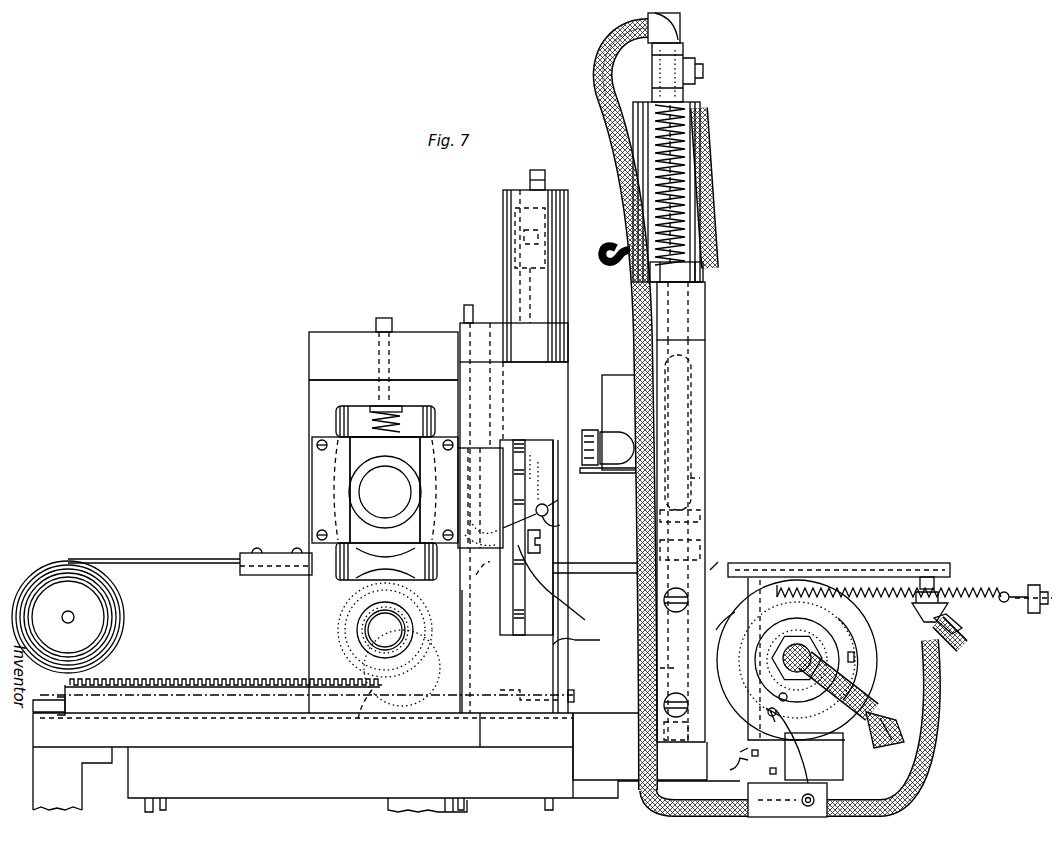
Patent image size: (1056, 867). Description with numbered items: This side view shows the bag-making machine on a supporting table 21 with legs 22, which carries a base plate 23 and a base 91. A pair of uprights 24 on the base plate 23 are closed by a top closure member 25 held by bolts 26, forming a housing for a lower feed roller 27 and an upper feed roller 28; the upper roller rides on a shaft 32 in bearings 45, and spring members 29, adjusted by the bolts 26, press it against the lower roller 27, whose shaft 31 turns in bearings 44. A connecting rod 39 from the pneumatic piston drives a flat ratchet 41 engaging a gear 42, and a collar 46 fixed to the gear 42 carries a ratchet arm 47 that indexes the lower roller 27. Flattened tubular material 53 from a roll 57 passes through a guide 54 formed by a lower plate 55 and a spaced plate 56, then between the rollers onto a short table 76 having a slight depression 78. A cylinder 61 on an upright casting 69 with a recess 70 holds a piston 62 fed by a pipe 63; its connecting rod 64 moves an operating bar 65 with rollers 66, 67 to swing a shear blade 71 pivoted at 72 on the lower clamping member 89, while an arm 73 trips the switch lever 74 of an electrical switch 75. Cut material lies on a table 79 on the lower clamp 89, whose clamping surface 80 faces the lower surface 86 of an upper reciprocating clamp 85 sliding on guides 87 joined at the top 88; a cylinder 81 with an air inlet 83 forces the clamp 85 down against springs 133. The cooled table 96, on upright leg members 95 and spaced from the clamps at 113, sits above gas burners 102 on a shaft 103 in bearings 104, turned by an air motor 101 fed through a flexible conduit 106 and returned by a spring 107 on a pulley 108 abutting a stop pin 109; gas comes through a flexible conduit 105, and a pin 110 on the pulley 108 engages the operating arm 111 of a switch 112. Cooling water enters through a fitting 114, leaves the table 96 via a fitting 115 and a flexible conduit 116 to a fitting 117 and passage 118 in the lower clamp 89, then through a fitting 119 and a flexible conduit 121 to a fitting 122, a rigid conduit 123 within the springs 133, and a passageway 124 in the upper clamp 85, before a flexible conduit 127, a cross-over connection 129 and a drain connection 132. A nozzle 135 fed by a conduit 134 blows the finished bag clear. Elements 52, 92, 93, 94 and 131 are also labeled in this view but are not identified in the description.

The supporting table 21 is at (612, 773).
The legs 22 is at (110, 795).
The base plate 23 is at (560, 728).
The uprights 24 is at (315, 430).
The top closure member 25 is at (345, 345).
The bolts 26 is at (392, 318).
The lower feed roller 27 is at (318, 598).
The upper feed roller 28 is at (318, 479).
The spring members 29 is at (400, 412).
The shaft 31 is at (370, 637).
The shaft 32 is at (385, 492).
The connecting rod 39 is at (50, 700).
The flat ratchet 41 is at (145, 678).
The gear 42 is at (315, 632).
The bearings 44 is at (410, 648).
The bearings 45 is at (380, 450).
The collar 46 is at (402, 705).
The ratchet arm 47 is at (354, 717).
The stop 52 is at (575, 688).
The material 53 is at (158, 556).
The guide member 54 is at (278, 552).
The lower plate 55 is at (262, 578).
The plate 56 is at (250, 550).
The roll 57 is at (126, 615).
The cylinder 61 is at (503, 203).
The piston 62 is at (516, 232).
The pipe 63 is at (545, 176).
The connecting rod 64 is at (570, 348).
The operating bar 65 is at (540, 485).
The roller 66 is at (515, 446).
The roller 67 is at (525, 608).
The upright casting 69 is at (498, 675).
The recess 70 is at (575, 640).
The shear blade 71 is at (559, 585).
The pivot 72 is at (540, 546).
The arm 73 is at (560, 525).
The switch lever 74 is at (548, 510).
The electrical switch 75 is at (482, 452).
The short table 76 is at (474, 651).
The depression 78 is at (476, 579).
The table 79 is at (610, 575).
The upper clamping surface 80 is at (705, 545).
The cylinder 81 is at (700, 105).
The inlet 83 is at (680, 20).
The upper reciprocating clamp 85 is at (700, 478).
The flat clamping lower surface 86 is at (700, 516).
The guides 87 is at (705, 420).
The top member 88 is at (705, 312).
The lower clamping member 89 is at (723, 612).
The base 91 is at (620, 790).
The clamp 92 is at (625, 430).
The clamp screw 93 is at (587, 430).
The bracket 94 is at (612, 372).
The upright leg members 95 is at (840, 585).
The table 96 is at (915, 545).
The air operated motor 101 is at (742, 659).
The gas burners 102 is at (856, 675).
The shaft 103 is at (838, 645).
The bearings 104 is at (752, 634).
The flexible conduit 105 is at (872, 700).
The flexible conduit 106 is at (892, 735).
The spring 107 is at (1030, 568).
The pulley 108 is at (822, 652).
The stop pin 109 is at (765, 716).
The pin 110 is at (788, 697).
The operating arm 111 is at (808, 758).
The switch 112 is at (785, 797).
The space 113 is at (712, 568).
The fitting 114 is at (962, 628).
The fitting 115 is at (938, 660).
The flexible conduit 116 is at (905, 765).
The fitting 117 is at (732, 767).
The passage 118 is at (650, 670).
The fitting 119 is at (732, 751).
The flexible conduit 121 is at (625, 188).
The fitting 122 is at (683, 42).
The rigid conduit 123 is at (672, 140).
The passageway 124 is at (690, 395).
The flexible conduit 127 is at (600, 46).
The cross-over flexible connection 129 is at (712, 218).
The collar 131 is at (703, 272).
The flexible connection 132 is at (612, 238).
The springs 133 is at (680, 170).
The conduit 134 is at (482, 292).
The nozzle 135 is at (483, 516).